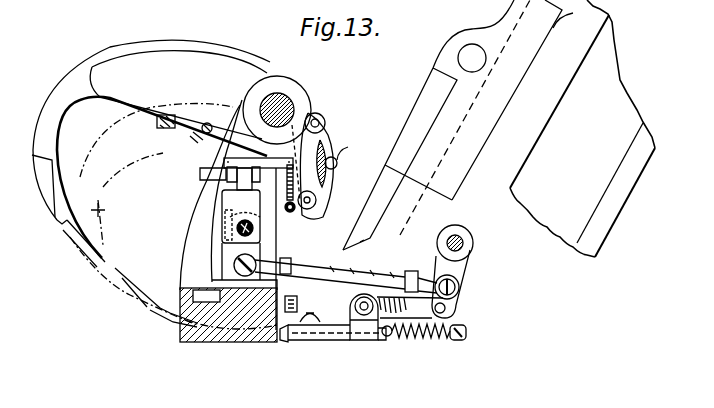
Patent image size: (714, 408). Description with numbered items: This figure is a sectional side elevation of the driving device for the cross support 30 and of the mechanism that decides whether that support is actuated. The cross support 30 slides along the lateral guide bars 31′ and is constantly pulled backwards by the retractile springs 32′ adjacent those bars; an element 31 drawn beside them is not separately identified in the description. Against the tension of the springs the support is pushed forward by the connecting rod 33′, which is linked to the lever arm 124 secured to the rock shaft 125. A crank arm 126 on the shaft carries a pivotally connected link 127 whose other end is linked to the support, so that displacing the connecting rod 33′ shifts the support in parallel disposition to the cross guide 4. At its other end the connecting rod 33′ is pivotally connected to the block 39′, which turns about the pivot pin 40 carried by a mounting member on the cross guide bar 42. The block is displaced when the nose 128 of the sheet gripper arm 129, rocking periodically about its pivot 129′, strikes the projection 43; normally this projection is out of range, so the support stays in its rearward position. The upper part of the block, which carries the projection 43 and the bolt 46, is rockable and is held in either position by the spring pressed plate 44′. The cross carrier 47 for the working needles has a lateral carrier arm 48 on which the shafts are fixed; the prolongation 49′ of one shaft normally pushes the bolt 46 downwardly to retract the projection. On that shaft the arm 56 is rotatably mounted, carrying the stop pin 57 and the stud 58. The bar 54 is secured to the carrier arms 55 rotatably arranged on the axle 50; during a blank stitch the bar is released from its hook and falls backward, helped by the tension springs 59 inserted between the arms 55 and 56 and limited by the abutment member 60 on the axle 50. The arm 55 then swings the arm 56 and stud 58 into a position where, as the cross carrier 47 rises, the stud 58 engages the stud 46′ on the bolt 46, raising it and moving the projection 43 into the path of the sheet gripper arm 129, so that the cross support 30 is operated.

The sheet gripper arm 129 is at (63, 80).
The pivot of sheet gripper arm 129′ is at (280, 93).
The stud on bolt 46′ is at (233, 110).
The arm 56 is at (290, 100).
The shaft (axle) 50 is at (328, 197).
The stop pin 57 is at (328, 136).
The abutment member 60 is at (348, 147).
The carrier arms 55 is at (338, 163).
The tension springs 59 is at (300, 211).
The prolongation of shaft 49′ is at (318, 115).
The lateral carrier arm 48 is at (327, 127).
The bar 54 is at (335, 150).
The cross carrier 47 is at (380, 220).
The stud 58 is at (212, 158).
The nose 128 is at (200, 148).
The bolt 46 is at (200, 160).
The projection (control member) 43 is at (195, 173).
The block 39′ is at (200, 185).
The spring pressed plate 44′ is at (238, 207).
The pivot pin 40 is at (180, 230).
The cross guide bar 42 is at (197, 342).
The connecting rod 33′ is at (349, 275).
The lever arm 124 is at (462, 268).
The rock shaft 125 is at (458, 238).
The crank arm 126 is at (447, 308).
The cross support 30 is at (352, 322).
The block 31 is at (377, 340).
The lateral guide bars 31′ is at (334, 340).
The cross guide 4 is at (288, 342).
The retractile springs 32′ is at (427, 338).
The link 127 is at (440, 340).